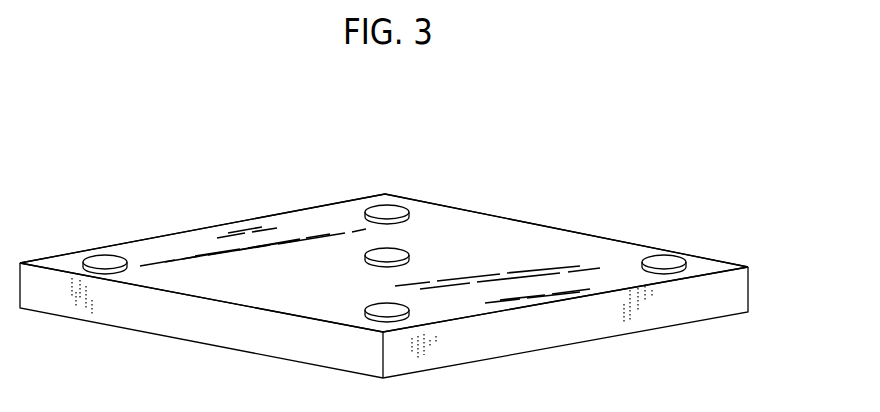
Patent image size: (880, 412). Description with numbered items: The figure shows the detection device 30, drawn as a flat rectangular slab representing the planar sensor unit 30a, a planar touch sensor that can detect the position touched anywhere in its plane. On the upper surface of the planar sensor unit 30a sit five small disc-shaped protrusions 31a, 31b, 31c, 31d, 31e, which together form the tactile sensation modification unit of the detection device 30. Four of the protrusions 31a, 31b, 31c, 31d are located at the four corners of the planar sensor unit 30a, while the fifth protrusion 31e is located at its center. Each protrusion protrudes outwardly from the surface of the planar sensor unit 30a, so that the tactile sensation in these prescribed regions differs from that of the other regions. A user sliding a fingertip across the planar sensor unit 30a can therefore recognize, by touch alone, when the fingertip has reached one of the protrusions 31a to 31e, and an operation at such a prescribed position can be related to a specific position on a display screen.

The detection device 30 is at (570, 248).
The planar sensor unit 30a is at (233, 290).
The protrusion 31a is at (103, 258).
The protrusion 31b is at (372, 201).
The protrusion 31c is at (670, 251).
The protrusion 31d is at (405, 302).
The protrusion 31e is at (404, 248).